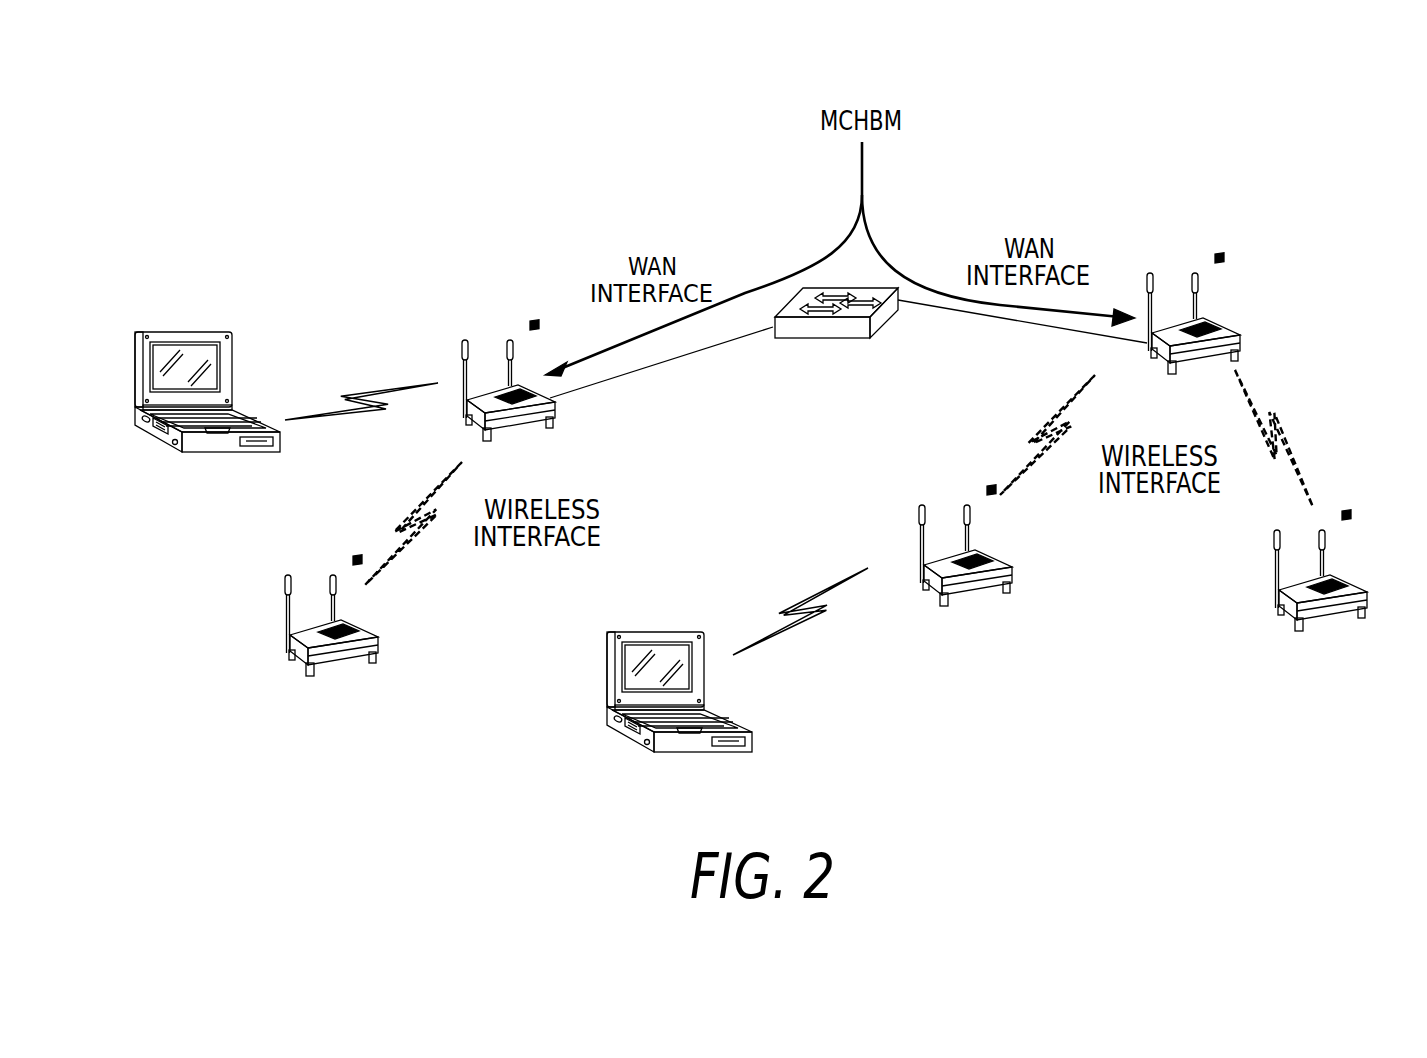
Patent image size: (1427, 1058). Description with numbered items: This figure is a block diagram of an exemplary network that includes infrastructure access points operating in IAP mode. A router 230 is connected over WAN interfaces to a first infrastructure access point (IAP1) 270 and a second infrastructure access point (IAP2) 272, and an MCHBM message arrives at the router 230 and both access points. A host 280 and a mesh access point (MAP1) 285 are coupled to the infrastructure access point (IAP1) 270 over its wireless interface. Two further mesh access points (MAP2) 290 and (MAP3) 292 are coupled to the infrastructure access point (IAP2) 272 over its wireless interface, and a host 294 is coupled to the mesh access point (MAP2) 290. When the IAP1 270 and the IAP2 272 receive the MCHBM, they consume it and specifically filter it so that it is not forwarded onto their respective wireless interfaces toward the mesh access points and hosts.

The router 230 is at (822, 338).
The infrastructure access point (IAP1) 270 is at (555, 410).
The infrastructure access point (IAP2) 272 is at (1222, 323).
The host 280 is at (140, 332).
The mesh access point (MAP1) 285 is at (378, 645).
The mesh access point (MAP2) 290 is at (1013, 576).
The mesh access point (MAP3) 292 is at (1368, 600).
The host 294 is at (618, 632).